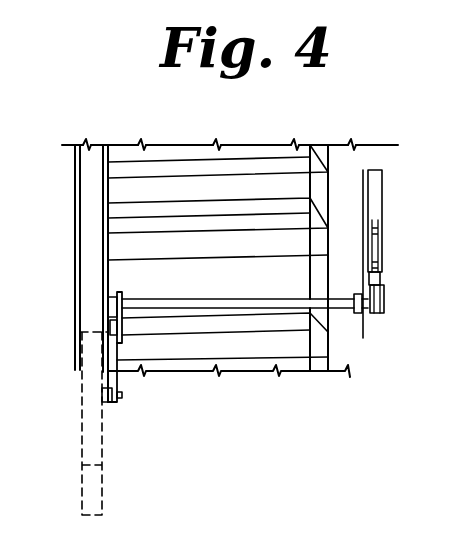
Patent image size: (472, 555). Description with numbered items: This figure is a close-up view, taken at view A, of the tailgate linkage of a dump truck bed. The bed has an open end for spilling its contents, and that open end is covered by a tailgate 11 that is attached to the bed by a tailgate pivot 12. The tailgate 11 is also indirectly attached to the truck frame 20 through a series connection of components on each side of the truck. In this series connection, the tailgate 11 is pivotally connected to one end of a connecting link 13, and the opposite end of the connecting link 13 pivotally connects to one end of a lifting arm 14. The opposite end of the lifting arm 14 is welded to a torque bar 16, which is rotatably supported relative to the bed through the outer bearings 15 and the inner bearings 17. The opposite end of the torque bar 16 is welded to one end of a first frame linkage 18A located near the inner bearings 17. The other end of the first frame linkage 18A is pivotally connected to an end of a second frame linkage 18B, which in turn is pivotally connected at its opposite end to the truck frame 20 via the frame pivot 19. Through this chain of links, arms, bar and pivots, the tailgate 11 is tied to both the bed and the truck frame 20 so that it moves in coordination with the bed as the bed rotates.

The tailgate 11 is at (384, 178).
The tailgate pivot 12 is at (380, 262).
The connecting link 13 is at (382, 288).
The lifting arm 14 is at (384, 315).
The outer bearings 15 is at (358, 314).
The torque bar 16 is at (278, 309).
The inner bearings 17 is at (110, 297).
The first frame linkage 18A is at (123, 340).
The second frame linkage 18B is at (118, 383).
The frame pivot 19 is at (122, 397).
The truck frame 20 is at (72, 455).